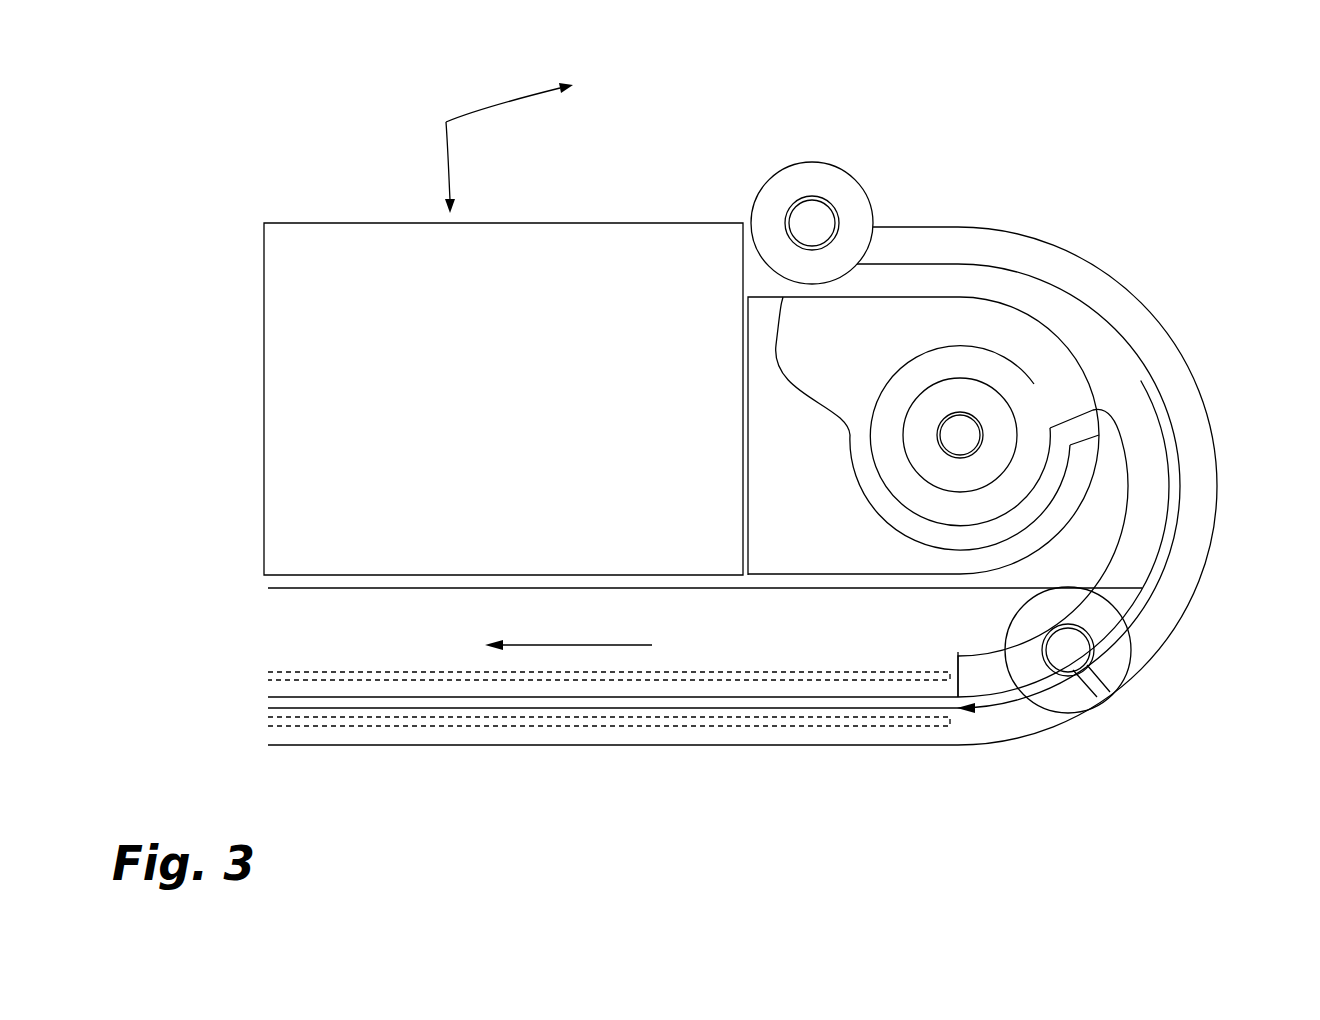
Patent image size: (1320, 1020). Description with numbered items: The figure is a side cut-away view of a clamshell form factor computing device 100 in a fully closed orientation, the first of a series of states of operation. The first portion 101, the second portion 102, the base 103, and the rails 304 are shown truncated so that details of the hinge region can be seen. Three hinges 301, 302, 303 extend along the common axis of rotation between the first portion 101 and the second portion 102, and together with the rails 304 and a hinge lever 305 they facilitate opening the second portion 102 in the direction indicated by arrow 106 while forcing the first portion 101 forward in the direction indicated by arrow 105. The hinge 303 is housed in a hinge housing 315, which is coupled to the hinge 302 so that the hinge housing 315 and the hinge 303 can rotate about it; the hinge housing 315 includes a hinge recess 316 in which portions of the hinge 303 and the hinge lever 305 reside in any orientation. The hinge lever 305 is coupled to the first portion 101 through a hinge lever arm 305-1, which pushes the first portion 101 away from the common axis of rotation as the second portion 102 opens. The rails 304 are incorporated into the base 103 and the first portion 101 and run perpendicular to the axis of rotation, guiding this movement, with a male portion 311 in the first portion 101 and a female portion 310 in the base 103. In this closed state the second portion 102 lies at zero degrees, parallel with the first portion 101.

The computing device 100 is at (207, 165).
The arrow 106 is at (446, 122).
The second portion 102 is at (352, 358).
The hinge housing 315 is at (768, 412).
The hinge 302 is at (853, 208).
The hinge recess 316 is at (886, 322).
The hinge 303 is at (989, 410).
The hinge lever 305 is at (1023, 410).
The hinge lever arm 305-1 is at (1197, 563).
The hinge 301 is at (1146, 528).
The rails 304 is at (1073, 693).
The first portion 101 is at (818, 590).
The base 103 is at (958, 612).
The arrow 105 is at (563, 645).
The female portion 310 is at (638, 726).
The male portion 311 is at (687, 717).